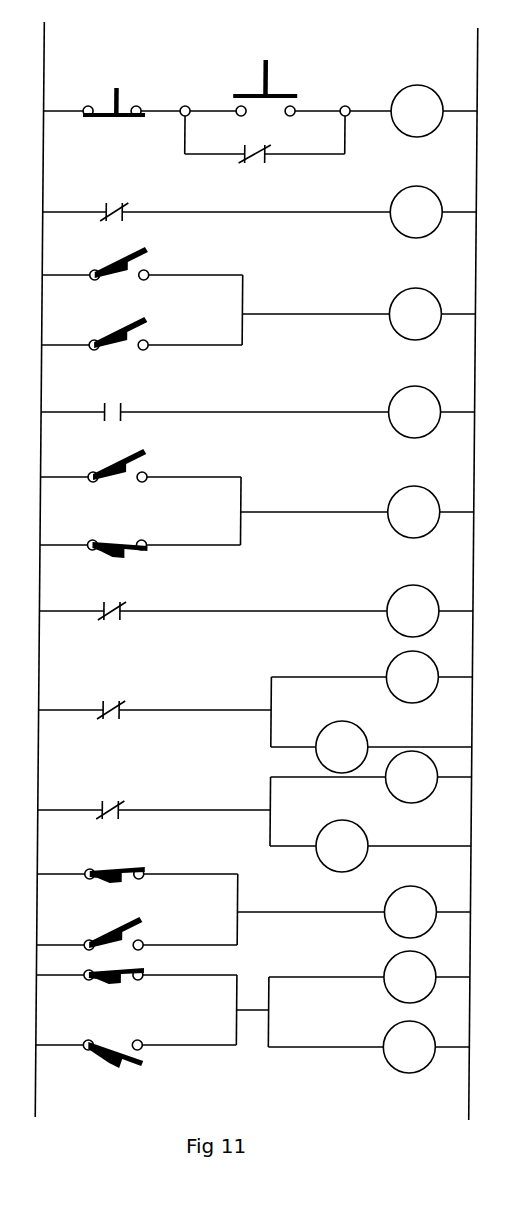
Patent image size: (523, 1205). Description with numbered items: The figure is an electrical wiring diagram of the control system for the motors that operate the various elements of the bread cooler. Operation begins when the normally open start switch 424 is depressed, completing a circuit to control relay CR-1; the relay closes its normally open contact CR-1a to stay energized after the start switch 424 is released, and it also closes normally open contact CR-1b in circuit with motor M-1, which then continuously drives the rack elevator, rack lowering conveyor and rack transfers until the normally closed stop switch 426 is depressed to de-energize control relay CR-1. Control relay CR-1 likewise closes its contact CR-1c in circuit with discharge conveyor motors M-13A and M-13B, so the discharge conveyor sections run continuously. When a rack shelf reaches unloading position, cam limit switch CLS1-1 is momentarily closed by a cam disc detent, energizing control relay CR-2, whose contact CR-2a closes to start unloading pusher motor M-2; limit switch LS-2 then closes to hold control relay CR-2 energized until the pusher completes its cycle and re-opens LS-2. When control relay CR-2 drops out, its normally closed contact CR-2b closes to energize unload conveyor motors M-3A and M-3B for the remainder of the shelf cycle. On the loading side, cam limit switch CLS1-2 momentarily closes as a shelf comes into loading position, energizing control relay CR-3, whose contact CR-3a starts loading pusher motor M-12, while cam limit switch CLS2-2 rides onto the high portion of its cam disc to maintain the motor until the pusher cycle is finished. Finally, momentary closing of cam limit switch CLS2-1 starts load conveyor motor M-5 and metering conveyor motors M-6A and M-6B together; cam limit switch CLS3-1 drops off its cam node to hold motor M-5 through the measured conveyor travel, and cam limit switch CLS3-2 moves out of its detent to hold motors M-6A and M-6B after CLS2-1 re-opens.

The start switch 424 is at (269, 74).
The stop switch 426 is at (119, 88).
The control relay CR-1 is at (417, 111).
The normally open contact CR-1a is at (257, 142).
The normally open contact CR-1b is at (119, 197).
The normally open contact CR-1c is at (138, 802).
The motor M-1 is at (416, 212).
The cam limit switch CLS1-1 is at (157, 262).
The limit switch LS-2 is at (144, 333).
The control relay CR-2 is at (415, 314).
The normally open contact CR-2a is at (147, 404).
The normally closed contact CR-2b is at (140, 702).
The unloading pusher motor M-2 is at (414, 412).
The cam limit switch CLS1-2 is at (156, 464).
The cam limit switch CLS2-2 is at (155, 539).
The control relay CR-3 is at (414, 512).
The normally open contact CR-3a is at (142, 603).
The loading pusher motor M-12 is at (413, 611).
The unload conveyor motor M-3A is at (377, 677).
The unload conveyor motor M-3B is at (369, 747).
The discharge conveyor motor M-13A is at (376, 777).
The discharge conveyor motor M-13B is at (375, 846).
The cam limit switch CLS2-1 is at (151, 924).
The cam limit switch CLS3-1 is at (151, 933).
The load conveyor motor M-5 is at (410, 912).
The cam limit switch CLS3-2 is at (150, 1046).
The metering conveyor motor M-6A is at (376, 977).
The metering conveyor motor M-6B is at (377, 1047).